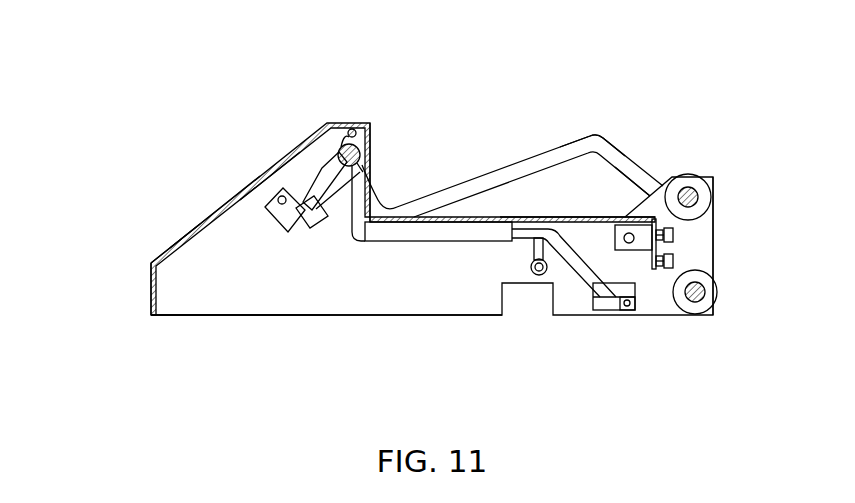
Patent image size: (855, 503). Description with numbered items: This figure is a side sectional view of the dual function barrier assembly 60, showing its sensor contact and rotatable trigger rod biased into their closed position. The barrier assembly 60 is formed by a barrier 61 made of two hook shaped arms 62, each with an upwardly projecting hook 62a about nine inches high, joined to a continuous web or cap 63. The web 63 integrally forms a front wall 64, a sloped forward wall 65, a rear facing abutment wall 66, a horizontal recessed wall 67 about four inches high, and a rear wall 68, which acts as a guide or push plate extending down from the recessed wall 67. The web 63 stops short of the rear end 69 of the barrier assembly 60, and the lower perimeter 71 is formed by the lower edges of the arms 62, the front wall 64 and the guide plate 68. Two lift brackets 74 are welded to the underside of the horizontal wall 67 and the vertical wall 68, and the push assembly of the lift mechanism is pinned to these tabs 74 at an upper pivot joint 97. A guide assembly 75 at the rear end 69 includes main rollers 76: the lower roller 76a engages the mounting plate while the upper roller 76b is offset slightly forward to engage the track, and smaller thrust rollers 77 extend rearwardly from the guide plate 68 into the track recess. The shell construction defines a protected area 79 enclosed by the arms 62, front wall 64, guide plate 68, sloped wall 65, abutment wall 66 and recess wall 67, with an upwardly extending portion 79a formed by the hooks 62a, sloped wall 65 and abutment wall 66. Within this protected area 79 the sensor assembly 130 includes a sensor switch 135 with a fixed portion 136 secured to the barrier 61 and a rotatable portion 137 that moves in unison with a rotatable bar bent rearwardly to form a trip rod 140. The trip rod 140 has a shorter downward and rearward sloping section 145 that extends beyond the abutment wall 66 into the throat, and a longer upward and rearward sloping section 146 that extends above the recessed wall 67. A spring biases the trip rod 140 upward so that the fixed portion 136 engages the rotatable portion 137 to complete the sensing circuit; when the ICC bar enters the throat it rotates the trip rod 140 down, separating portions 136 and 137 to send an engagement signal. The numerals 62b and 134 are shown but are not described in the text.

The dual function barrier assembly 60 is at (172, 226).
The barrier 61 is at (353, 128).
The hook shaped arm 62 is at (408, 283).
The upwardly projecting hook 62a is at (293, 170).
The rear wall 62b is at (707, 220).
The continuous web or cap 63 is at (346, 143).
The front wall 64 is at (152, 293).
The sloped forward wall 65 is at (168, 250).
The rear facing abutment wall 66 is at (373, 155).
The horizontal recessed wall 67 is at (568, 216).
The rear wall 68 is at (630, 205).
The rear end 69 is at (713, 245).
The lower perimeter 71 is at (285, 315).
The lift bracket 74 is at (622, 244).
The guide assembly 75 is at (702, 166).
The main roller 76 is at (711, 285).
The lower roller 76a is at (708, 298).
The upper roller 76b is at (703, 187).
The thrust roller 77 is at (673, 236).
The protected area 79 is at (402, 298).
The upwardly extending portion 79a is at (283, 178).
The upper pivot joint 97 is at (627, 246).
The sensor assembly 130 is at (309, 162).
The pivot pin 134 is at (522, 248).
The sensor switch 135 is at (286, 233).
The fixed portion 136 is at (270, 210).
The rotatable portion 137 is at (318, 227).
The trip rod 140 is at (513, 172).
The shorter downward and rearward sloping section 145 is at (375, 187).
The longer upward and rearward sloping section 146 is at (563, 150).